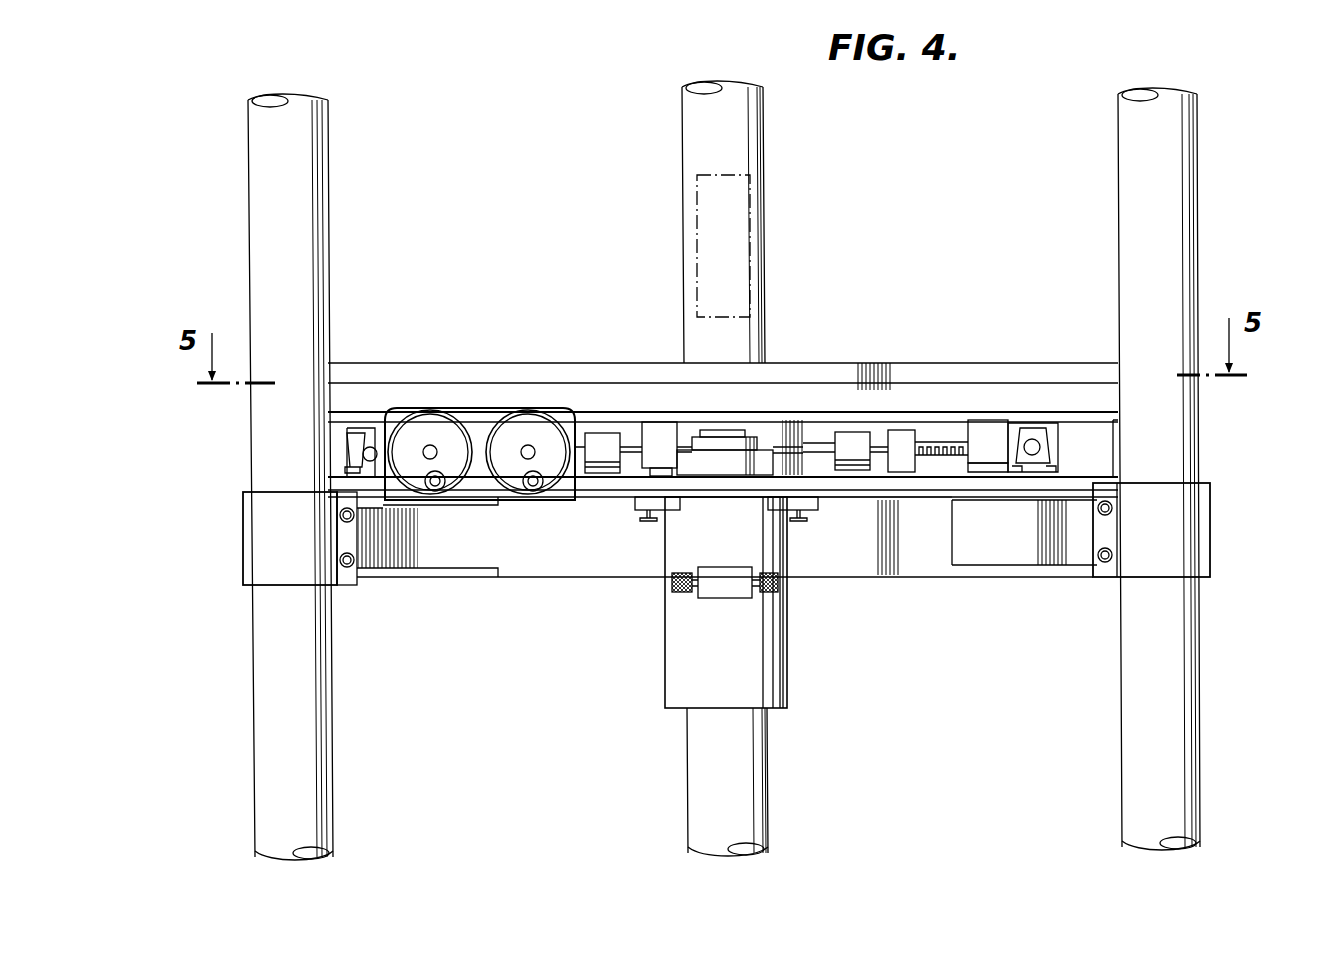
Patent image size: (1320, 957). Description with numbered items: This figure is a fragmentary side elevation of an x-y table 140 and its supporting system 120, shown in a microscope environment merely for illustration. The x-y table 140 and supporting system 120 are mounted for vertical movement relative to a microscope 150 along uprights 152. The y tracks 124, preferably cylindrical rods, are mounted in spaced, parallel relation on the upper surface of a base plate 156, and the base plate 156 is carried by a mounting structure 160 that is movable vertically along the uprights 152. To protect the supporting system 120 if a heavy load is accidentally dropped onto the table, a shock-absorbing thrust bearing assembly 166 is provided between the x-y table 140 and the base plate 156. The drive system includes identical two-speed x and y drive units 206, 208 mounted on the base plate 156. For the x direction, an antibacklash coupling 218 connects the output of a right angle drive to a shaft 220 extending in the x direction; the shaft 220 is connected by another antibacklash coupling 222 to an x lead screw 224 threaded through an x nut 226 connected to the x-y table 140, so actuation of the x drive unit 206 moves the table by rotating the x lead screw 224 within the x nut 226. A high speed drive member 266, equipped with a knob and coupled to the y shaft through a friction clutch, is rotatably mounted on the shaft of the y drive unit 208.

The uprights 152 is at (268, 198).
The microscope 150 is at (697, 236).
The x-y table 140 is at (793, 363).
The shaft 220 is at (822, 445).
The antibacklash coupling 222 is at (850, 437).
The x lead screw 224 is at (938, 438).
The x nut 226 is at (990, 430).
The two-speed y drive unit 208 is at (434, 407).
The two-speed x drive unit 206 is at (538, 407).
The antibacklash coupling 218 is at (598, 440).
The shock-absorbing thrust bearing assembly 166 is at (661, 424).
The y tracks 124 is at (363, 454).
The mounting structure 160 is at (256, 549).
The high speed drive member 266 is at (417, 473).
The supporting system 120 is at (612, 485).
The base plate 156 is at (865, 482).